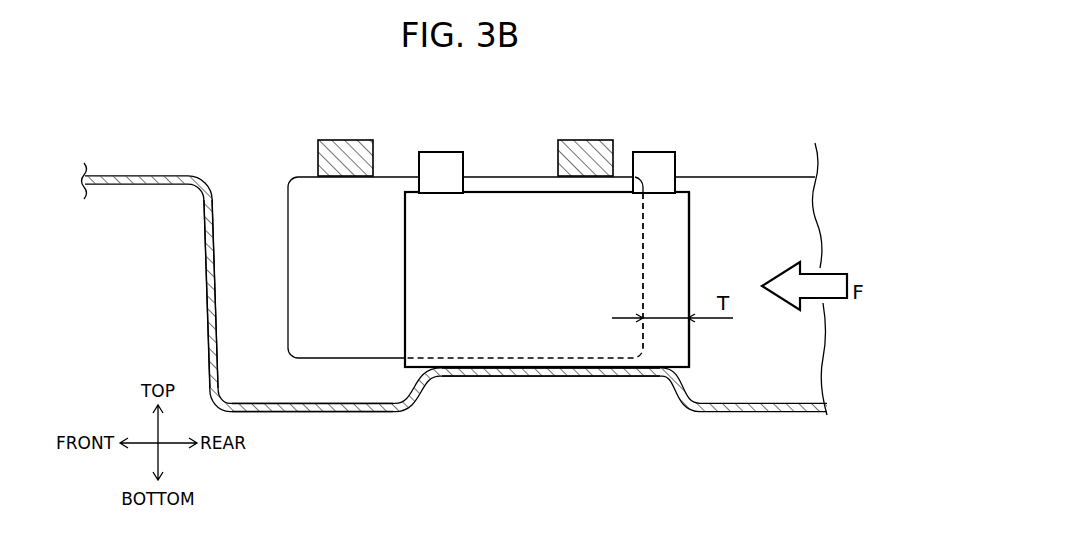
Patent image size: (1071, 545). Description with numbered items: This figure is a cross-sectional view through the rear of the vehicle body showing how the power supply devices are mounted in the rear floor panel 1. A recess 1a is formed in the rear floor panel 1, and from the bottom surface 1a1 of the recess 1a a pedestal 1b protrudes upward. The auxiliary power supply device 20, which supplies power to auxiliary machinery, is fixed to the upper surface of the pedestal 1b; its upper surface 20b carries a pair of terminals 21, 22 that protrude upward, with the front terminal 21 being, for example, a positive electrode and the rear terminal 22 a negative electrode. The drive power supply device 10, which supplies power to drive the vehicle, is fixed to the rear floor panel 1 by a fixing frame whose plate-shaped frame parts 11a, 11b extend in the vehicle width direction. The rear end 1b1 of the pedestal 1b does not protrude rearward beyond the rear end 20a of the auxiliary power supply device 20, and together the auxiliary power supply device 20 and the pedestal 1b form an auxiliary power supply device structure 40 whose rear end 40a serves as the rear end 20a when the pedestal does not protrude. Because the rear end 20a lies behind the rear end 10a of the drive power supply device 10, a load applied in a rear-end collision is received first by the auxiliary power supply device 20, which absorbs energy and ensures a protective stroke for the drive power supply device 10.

The rear floor panel 1 is at (139, 175).
The recess 1a is at (208, 304).
The bottom surface of the recess 1a1 is at (288, 407).
The pedestal 1b is at (398, 402).
The rear end of the pedestal 1b1 is at (682, 383).
The drive power supply device 10 is at (276, 235).
The rear end of the drive power supply device 10a is at (645, 228).
The frame part 11a is at (348, 140).
The frame part 11b is at (588, 140).
The auxiliary power supply device 20 is at (391, 326).
The rear end of the auxiliary power supply device 20a is at (690, 240).
The upper surface of the auxiliary power supply device 20b is at (515, 191).
The rear end of the auxiliary power supply device structure 40a is at (746, 279).
The terminal 21 is at (441, 151).
The terminal 22 is at (652, 151).
The auxiliary power supply device structure 40 is at (422, 472).